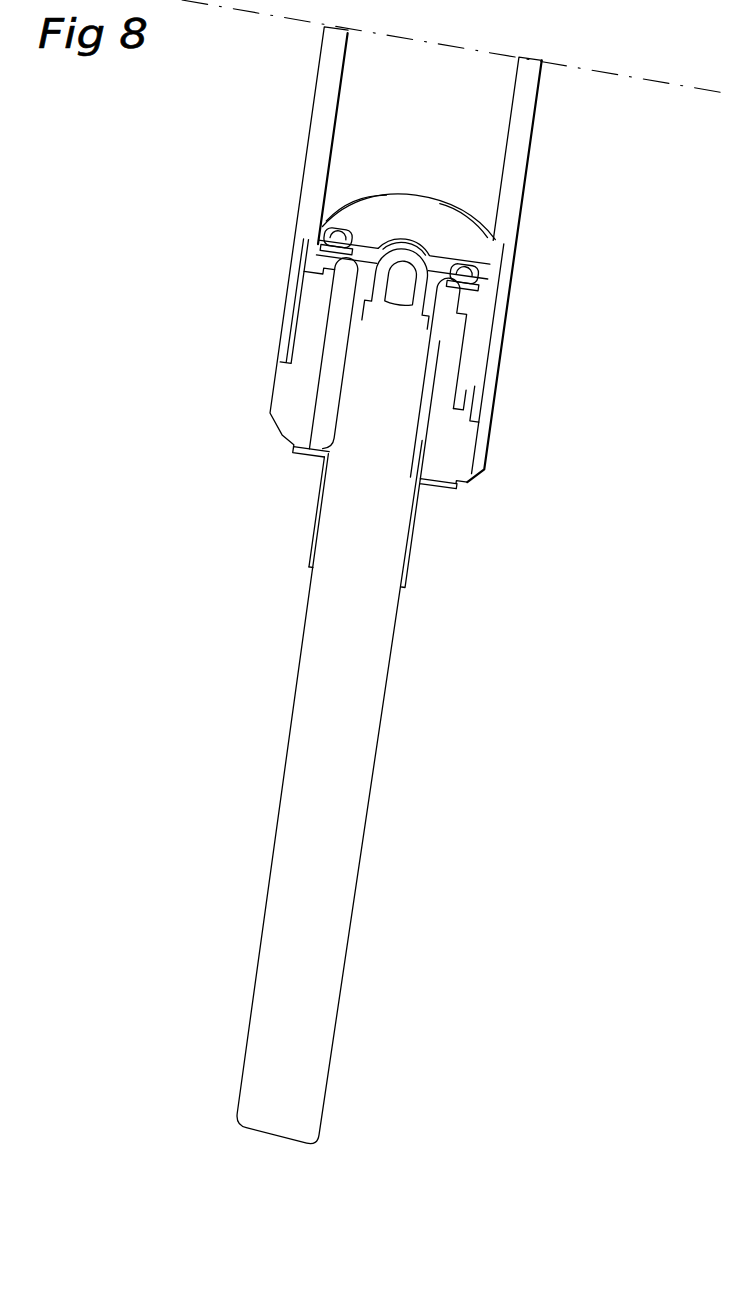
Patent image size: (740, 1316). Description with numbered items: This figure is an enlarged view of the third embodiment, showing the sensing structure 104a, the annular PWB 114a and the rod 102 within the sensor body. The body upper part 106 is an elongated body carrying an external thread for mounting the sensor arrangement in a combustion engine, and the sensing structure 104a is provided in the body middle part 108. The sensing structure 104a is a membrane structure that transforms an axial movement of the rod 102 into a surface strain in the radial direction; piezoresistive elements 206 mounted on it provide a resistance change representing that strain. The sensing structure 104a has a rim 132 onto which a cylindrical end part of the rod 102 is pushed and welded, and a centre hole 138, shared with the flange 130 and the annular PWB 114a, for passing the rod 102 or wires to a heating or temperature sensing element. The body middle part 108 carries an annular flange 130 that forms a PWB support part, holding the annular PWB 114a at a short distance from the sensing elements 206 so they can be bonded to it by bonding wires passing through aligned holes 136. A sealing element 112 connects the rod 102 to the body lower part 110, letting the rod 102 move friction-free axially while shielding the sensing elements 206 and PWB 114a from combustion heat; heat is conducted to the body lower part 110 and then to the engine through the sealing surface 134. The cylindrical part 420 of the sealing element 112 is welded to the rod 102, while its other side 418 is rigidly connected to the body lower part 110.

The rod 102 is at (372, 665).
The sensing structure 104a is at (500, 326).
The body upper part 106 is at (508, 195).
The body middle part 108 is at (295, 290).
The body lower part 110 is at (473, 440).
The sealing element 112 is at (318, 512).
The annular PWB 114a is at (520, 238).
The annular flange 130 is at (357, 247).
The rim 132 is at (430, 323).
The sealing surface 134 is at (473, 480).
The aligned holes 136 is at (352, 228).
The centre hole 138 is at (400, 240).
The piezoresistive elements 206 is at (320, 241).
The other side of the sealing element 418 is at (303, 457).
The cylindrical part 420 is at (311, 553).